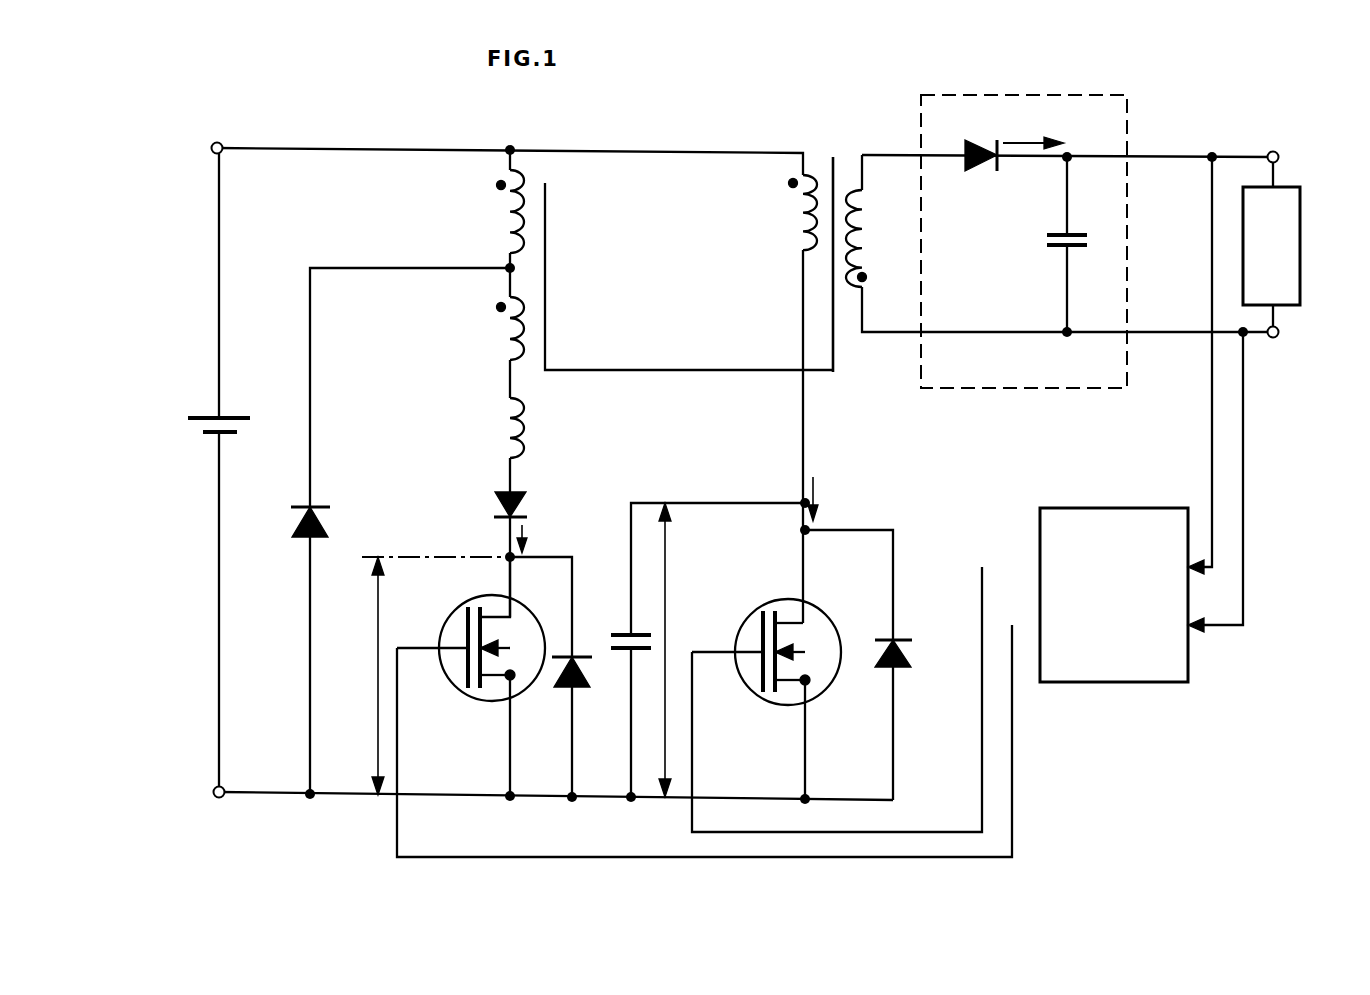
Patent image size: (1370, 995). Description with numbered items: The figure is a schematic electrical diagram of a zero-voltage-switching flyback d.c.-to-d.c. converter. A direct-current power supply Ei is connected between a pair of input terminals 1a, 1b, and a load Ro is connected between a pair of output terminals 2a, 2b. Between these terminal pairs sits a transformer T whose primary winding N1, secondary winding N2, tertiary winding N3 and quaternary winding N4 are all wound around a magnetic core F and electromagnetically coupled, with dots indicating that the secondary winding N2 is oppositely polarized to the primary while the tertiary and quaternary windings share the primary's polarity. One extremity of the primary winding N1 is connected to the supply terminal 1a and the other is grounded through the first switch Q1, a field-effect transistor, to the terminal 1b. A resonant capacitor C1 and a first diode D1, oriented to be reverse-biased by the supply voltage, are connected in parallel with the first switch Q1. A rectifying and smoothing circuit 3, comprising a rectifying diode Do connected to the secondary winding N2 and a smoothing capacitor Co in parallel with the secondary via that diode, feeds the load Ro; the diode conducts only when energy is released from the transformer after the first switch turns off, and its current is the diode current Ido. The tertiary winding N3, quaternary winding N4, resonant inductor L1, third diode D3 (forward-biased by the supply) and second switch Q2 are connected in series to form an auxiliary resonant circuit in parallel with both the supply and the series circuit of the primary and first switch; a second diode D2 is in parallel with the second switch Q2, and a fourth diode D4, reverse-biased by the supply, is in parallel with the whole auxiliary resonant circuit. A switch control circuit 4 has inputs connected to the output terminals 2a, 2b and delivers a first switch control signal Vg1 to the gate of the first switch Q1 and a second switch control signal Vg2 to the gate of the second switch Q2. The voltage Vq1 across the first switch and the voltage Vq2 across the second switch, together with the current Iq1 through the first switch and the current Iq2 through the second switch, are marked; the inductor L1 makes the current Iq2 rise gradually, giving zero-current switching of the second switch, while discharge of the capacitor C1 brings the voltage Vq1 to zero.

The input terminal 1a is at (217, 142).
The input terminal 1b is at (219, 798).
The output terminal 2a is at (1273, 151).
The output terminal 2b is at (1273, 338).
The rectifying and smoothing circuit 3 is at (1127, 150).
The switch control circuit 4 is at (1105, 509).
The transformer T is at (826, 234).
The magnetic core F is at (835, 360).
The primary winding N1 is at (800, 218).
The secondary winding N2 is at (868, 236).
The tertiary winding N3 is at (502, 220).
The quaternary winding N4 is at (500, 326).
The resonant inductor L1 is at (525, 428).
The first diode D1 is at (870, 636).
The second diode D2 is at (554, 646).
The third diode D3 is at (528, 506).
The fourth diode D4 is at (330, 522).
The rectifying diode Do is at (977, 172).
The smoothing capacitor Co is at (1062, 234).
The resonant capacitor C1 is at (620, 632).
The first switch Q1 is at (746, 620).
The second switch Q2 is at (444, 626).
The direct-current power supply Ei is at (228, 412).
The load Ro is at (1302, 248).
The voltage across the first switch Vq1 is at (653, 650).
The voltage across the second switch Vq2 is at (430, 676).
The current through the first switch Iq1 is at (828, 499).
The current through the second switch Iq2 is at (536, 542).
The diode current Ido is at (1033, 131).
The first switch control signal Vg1 is at (982, 740).
The second switch control signal Vg2 is at (1013, 748).